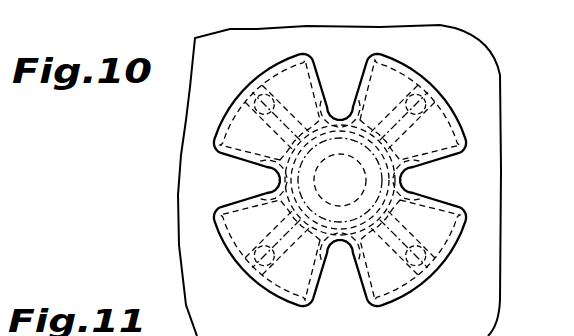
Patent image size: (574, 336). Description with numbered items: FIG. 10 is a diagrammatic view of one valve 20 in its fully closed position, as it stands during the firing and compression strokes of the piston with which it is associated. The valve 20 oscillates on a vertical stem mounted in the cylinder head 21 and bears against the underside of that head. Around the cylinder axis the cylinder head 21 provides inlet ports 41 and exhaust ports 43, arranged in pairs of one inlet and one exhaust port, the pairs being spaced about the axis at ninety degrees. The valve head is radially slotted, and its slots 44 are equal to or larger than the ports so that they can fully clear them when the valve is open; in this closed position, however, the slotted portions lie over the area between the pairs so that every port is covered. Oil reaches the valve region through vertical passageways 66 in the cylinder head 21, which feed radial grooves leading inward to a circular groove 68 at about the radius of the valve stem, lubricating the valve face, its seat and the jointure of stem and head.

The valve 20 is at (305, 173).
The cylinder head 21 is at (492, 218).
The inlet ports 41 is at (226, 168).
The exhaust ports 43 is at (315, 68).
The slots 44 is at (362, 63).
The passageways 66 is at (254, 105).
The circular groove 68 is at (343, 142).